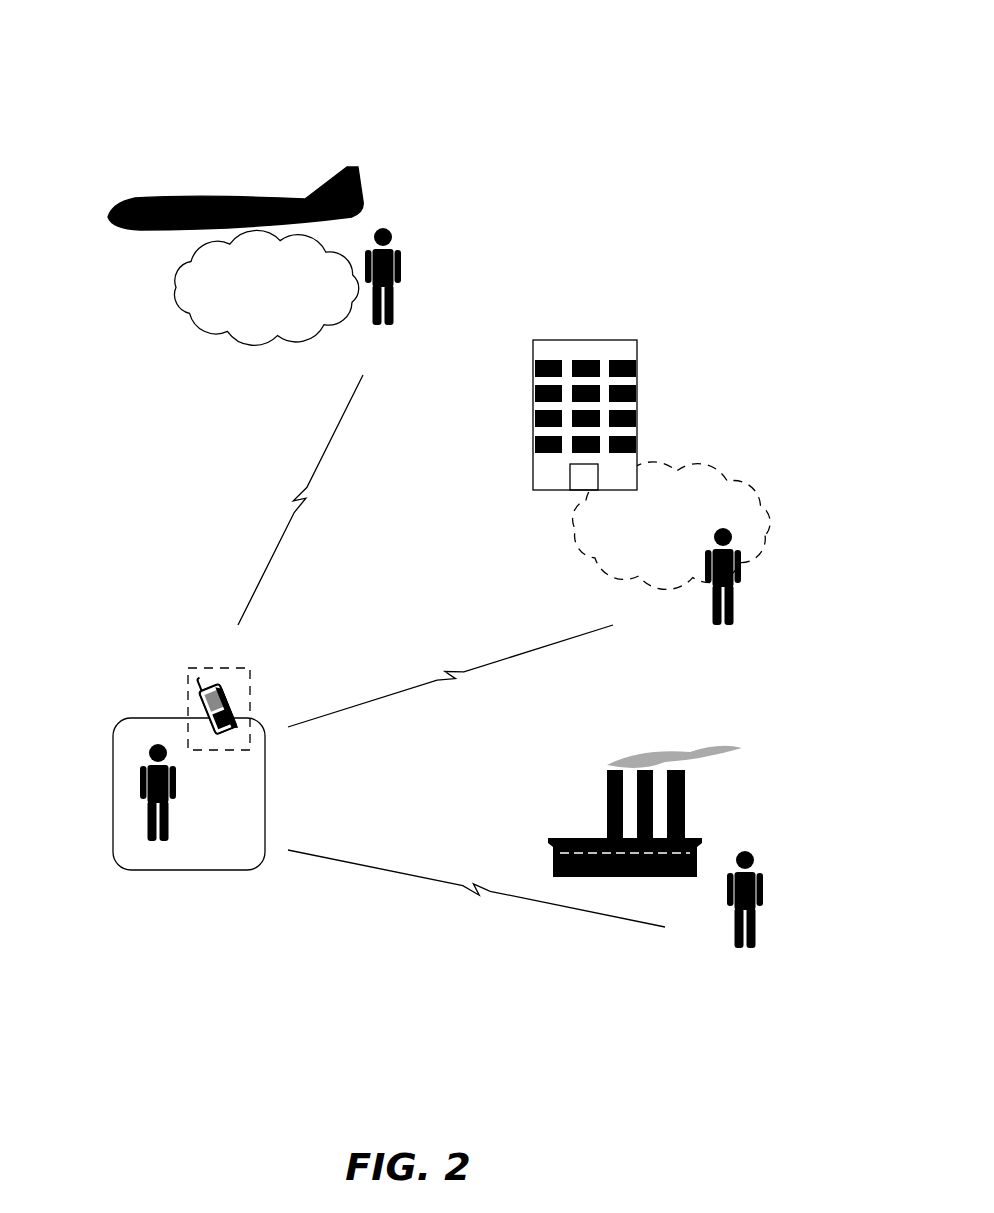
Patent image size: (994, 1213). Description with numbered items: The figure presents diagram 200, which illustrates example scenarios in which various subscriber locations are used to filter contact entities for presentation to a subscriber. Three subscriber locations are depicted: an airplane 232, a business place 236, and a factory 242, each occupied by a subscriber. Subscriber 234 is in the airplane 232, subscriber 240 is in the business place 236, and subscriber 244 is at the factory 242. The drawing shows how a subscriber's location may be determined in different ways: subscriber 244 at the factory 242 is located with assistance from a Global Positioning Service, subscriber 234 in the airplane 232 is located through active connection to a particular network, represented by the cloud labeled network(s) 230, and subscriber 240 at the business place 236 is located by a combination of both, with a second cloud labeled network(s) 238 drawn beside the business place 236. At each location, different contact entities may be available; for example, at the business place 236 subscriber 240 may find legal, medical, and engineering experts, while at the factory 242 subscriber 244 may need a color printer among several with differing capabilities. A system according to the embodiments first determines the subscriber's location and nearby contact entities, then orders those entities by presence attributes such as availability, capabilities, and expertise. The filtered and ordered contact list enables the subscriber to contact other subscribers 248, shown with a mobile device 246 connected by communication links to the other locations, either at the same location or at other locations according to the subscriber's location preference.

The diagram 200 is at (684, 56).
The network(s) 230 is at (266, 287).
The airplane 232 is at (161, 181).
The subscriber 234 is at (391, 342).
The business place 236 is at (616, 320).
The network(s) 238 is at (672, 526).
The subscriber 240 is at (717, 642).
The factory 242 is at (565, 782).
The subscriber 244 is at (742, 966).
The mobile device 246 is at (211, 659).
The other subscribers 248 is at (211, 887).